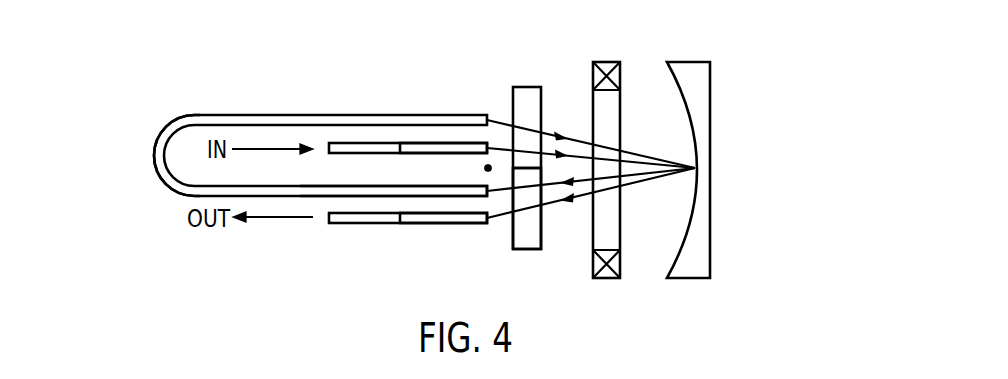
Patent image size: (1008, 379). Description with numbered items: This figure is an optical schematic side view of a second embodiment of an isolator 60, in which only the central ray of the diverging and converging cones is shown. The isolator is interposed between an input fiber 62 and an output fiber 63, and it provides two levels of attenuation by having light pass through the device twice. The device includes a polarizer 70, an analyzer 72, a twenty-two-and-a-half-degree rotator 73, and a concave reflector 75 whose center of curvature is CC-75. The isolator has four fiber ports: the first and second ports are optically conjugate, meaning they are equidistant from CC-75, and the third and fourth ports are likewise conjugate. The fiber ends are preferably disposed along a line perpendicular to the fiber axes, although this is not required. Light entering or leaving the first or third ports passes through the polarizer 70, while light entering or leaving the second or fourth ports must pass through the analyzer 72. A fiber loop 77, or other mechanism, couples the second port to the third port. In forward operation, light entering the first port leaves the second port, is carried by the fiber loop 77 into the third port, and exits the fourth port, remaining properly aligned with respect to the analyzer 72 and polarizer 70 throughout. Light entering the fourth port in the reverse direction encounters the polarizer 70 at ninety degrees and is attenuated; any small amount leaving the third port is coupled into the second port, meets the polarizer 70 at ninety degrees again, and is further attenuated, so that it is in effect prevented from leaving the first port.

The isolator 60 is at (323, 267).
The input fiber 62 is at (360, 155).
The output fiber 63 is at (360, 224).
The polarizer 70 is at (541, 102).
The analyzer 72 is at (541, 241).
The 22.5° rotator 73 is at (620, 100).
The concave reflector 75 is at (687, 237).
The fiber loop 77 is at (206, 114).
The center of curvature CC-75 is at (488, 169).